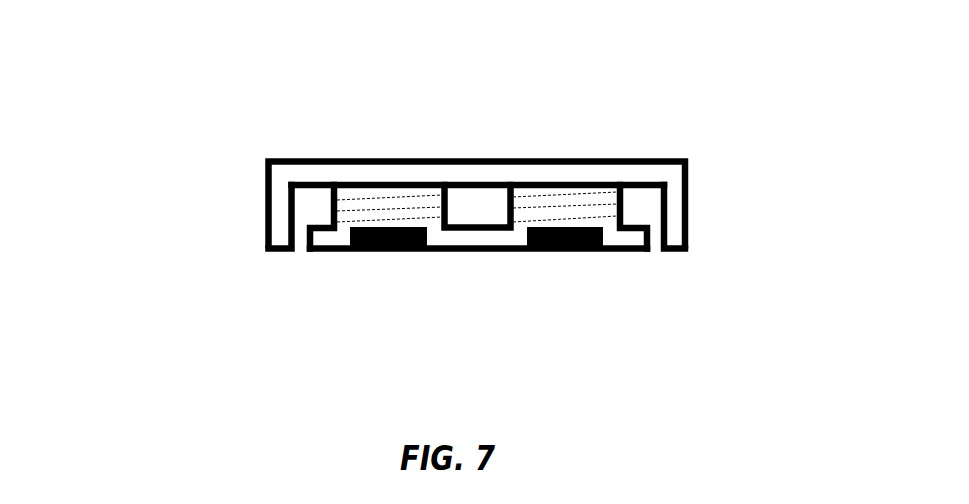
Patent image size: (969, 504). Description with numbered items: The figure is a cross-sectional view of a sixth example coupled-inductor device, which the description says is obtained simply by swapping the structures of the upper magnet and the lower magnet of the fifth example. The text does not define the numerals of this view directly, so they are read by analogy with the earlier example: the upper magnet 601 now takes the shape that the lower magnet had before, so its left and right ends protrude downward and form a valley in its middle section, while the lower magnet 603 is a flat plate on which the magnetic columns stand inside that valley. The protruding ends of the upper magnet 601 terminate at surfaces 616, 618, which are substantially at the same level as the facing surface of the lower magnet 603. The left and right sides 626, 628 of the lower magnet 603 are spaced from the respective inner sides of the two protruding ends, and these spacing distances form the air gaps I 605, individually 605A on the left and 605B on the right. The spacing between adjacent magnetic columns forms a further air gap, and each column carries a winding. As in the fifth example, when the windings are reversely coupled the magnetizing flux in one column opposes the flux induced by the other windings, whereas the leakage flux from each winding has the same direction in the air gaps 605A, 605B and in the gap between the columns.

The housing shell 601 is at (478, 172).
The bottom wall / substrate 603 is at (459, 238).
The slots 605 is at (486, 290).
The first slot 605A is at (303, 242).
The second slot 605B is at (653, 242).
The first inner rib 616 is at (308, 232).
The second inner rib 618 is at (650, 233).
The first inner wall 626 is at (290, 237).
The second inner wall 628 is at (667, 228).